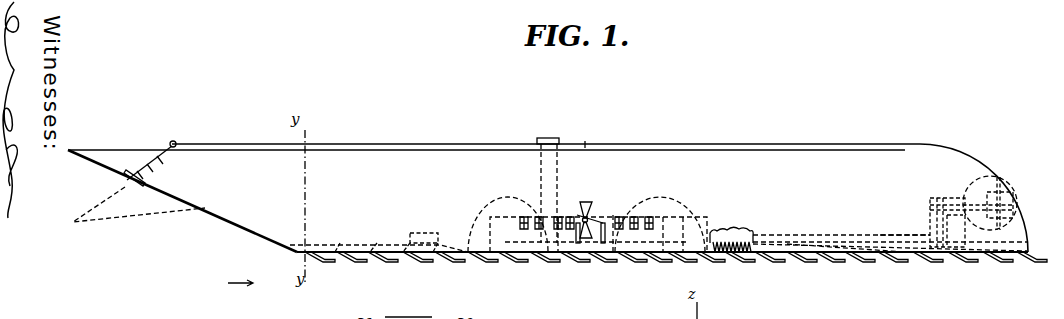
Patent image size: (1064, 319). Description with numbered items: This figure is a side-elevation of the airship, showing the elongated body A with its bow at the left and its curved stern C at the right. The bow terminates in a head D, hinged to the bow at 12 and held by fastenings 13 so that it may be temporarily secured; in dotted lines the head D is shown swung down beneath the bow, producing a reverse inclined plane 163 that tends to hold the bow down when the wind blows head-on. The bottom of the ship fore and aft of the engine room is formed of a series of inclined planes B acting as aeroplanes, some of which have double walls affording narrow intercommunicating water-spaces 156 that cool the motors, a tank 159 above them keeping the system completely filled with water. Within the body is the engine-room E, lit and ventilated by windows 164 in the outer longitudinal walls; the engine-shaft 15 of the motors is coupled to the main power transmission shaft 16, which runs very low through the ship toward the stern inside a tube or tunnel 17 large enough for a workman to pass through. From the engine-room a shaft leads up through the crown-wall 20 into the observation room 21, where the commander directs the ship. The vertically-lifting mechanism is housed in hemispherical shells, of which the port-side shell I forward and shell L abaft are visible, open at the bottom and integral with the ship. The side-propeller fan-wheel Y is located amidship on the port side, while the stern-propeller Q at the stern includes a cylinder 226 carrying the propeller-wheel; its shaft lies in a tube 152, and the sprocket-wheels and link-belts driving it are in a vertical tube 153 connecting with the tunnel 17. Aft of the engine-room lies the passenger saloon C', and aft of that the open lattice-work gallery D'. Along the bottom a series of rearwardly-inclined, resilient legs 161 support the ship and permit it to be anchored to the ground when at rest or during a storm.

The hinge 12 is at (126, 179).
The fastenings 13 is at (154, 170).
The engine-shaft 15 is at (556, 250).
The main power transmission shaft 16 is at (810, 244).
The tube or tunnel 17 is at (803, 231).
The crown-wall 20 is at (588, 137).
The observation room 21 is at (546, 182).
The tube 152 is at (966, 215).
The vertical tube 153 is at (931, 216).
The water-spaces 156 is at (373, 252).
The tank 159 is at (428, 231).
The legs 161 is at (838, 264).
The reverse inclined plane 163 is at (97, 201).
The windows 164 is at (649, 211).
The cylinder 226 is at (1008, 200).
The ship's body A is at (690, 163).
The inclined planes B is at (204, 174).
The stern C is at (975, 144).
The head D is at (121, 136).
The engine-room E is at (682, 221).
The hemispherical shell I is at (501, 204).
The hemispherical shell L is at (660, 214).
The stern-propeller Q is at (1036, 201).
The fan-wheel Y is at (586, 200).
The saloon C' is at (724, 226).
The gallery D' is at (737, 270).